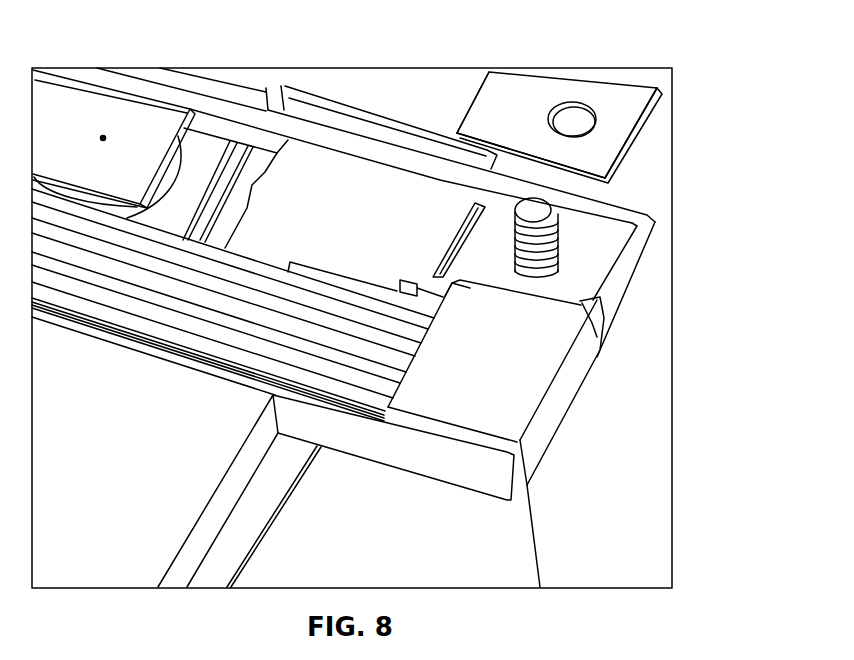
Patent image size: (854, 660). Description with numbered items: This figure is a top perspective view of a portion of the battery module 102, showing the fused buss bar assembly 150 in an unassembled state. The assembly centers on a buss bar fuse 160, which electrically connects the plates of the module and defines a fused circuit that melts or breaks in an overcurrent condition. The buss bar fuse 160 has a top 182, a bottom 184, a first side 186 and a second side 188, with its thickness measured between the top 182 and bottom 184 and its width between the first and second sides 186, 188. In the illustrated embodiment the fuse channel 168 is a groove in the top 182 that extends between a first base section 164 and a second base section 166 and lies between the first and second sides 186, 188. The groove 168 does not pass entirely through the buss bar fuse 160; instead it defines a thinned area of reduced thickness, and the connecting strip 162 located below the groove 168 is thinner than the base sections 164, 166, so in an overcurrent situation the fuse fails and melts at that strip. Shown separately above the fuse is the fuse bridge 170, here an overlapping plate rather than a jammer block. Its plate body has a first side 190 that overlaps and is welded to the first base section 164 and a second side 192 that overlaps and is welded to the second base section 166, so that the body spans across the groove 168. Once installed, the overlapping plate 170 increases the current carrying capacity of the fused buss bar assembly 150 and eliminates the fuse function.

The battery module 102 is at (652, 522).
The fused buss bar assembly 150 is at (460, 84).
The buss bar fuse 160 is at (352, 177).
The connecting strip 162 is at (468, 228).
The first base section 164 is at (417, 265).
The second base section 166 is at (460, 283).
The fuse channel 168 is at (466, 247).
The fuse bridge 170 is at (578, 85).
The top 182 is at (597, 241).
The bottom 184 is at (466, 282).
The first side 186 is at (450, 283).
The second side 188 is at (593, 201).
The first side 190 is at (514, 76).
The second side 192 is at (636, 95).